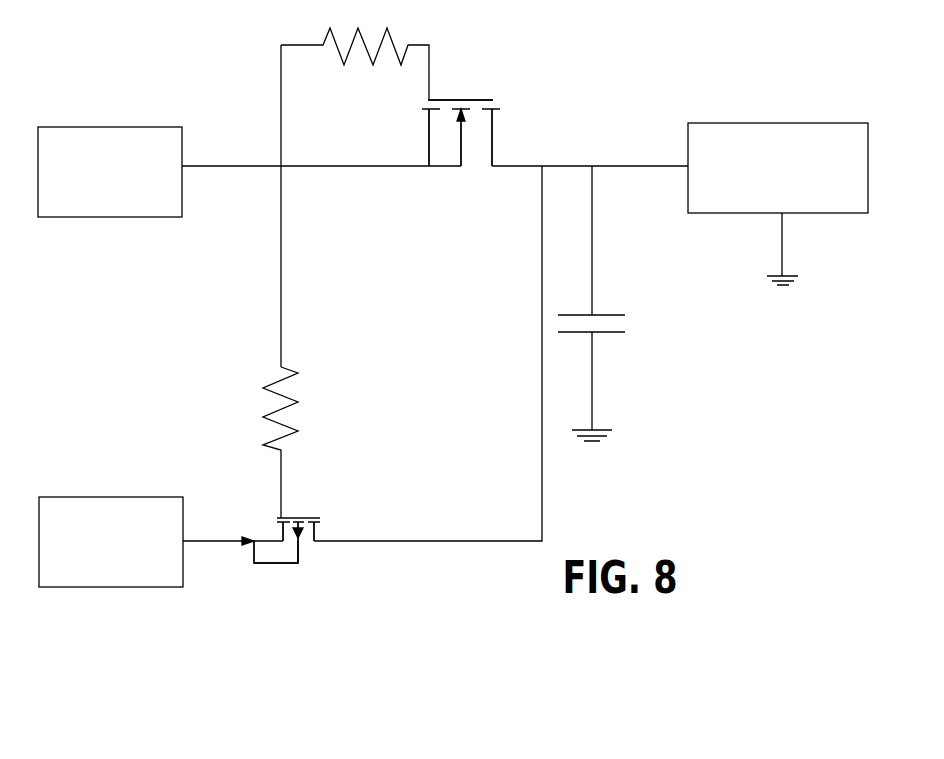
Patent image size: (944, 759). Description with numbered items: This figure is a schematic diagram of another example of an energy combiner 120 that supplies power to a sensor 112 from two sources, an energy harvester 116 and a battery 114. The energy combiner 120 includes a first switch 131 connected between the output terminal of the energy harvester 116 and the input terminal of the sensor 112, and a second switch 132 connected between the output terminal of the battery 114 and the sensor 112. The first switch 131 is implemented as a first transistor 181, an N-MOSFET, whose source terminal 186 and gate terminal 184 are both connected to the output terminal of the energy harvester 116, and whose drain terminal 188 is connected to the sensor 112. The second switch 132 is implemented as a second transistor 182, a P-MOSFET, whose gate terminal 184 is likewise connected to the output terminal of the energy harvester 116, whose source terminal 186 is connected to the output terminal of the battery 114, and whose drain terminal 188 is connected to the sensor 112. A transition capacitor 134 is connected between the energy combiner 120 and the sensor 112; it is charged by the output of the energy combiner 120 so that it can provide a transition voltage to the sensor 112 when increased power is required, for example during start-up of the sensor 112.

The sensor 112 is at (777, 123).
The battery 114 is at (135, 497).
The energy harvester 116 is at (157, 127).
The energy combiner 120 is at (617, 125).
The first switch 131 is at (418, 190).
The second switch 132 is at (343, 590).
The transition capacitor 134 is at (602, 340).
The first transistor 181 is at (452, 90).
The second transistor 182 is at (297, 570).
The gate terminal 184 is at (463, 100).
The source terminal 186 is at (427, 112).
The drain terminal 188 is at (495, 122).